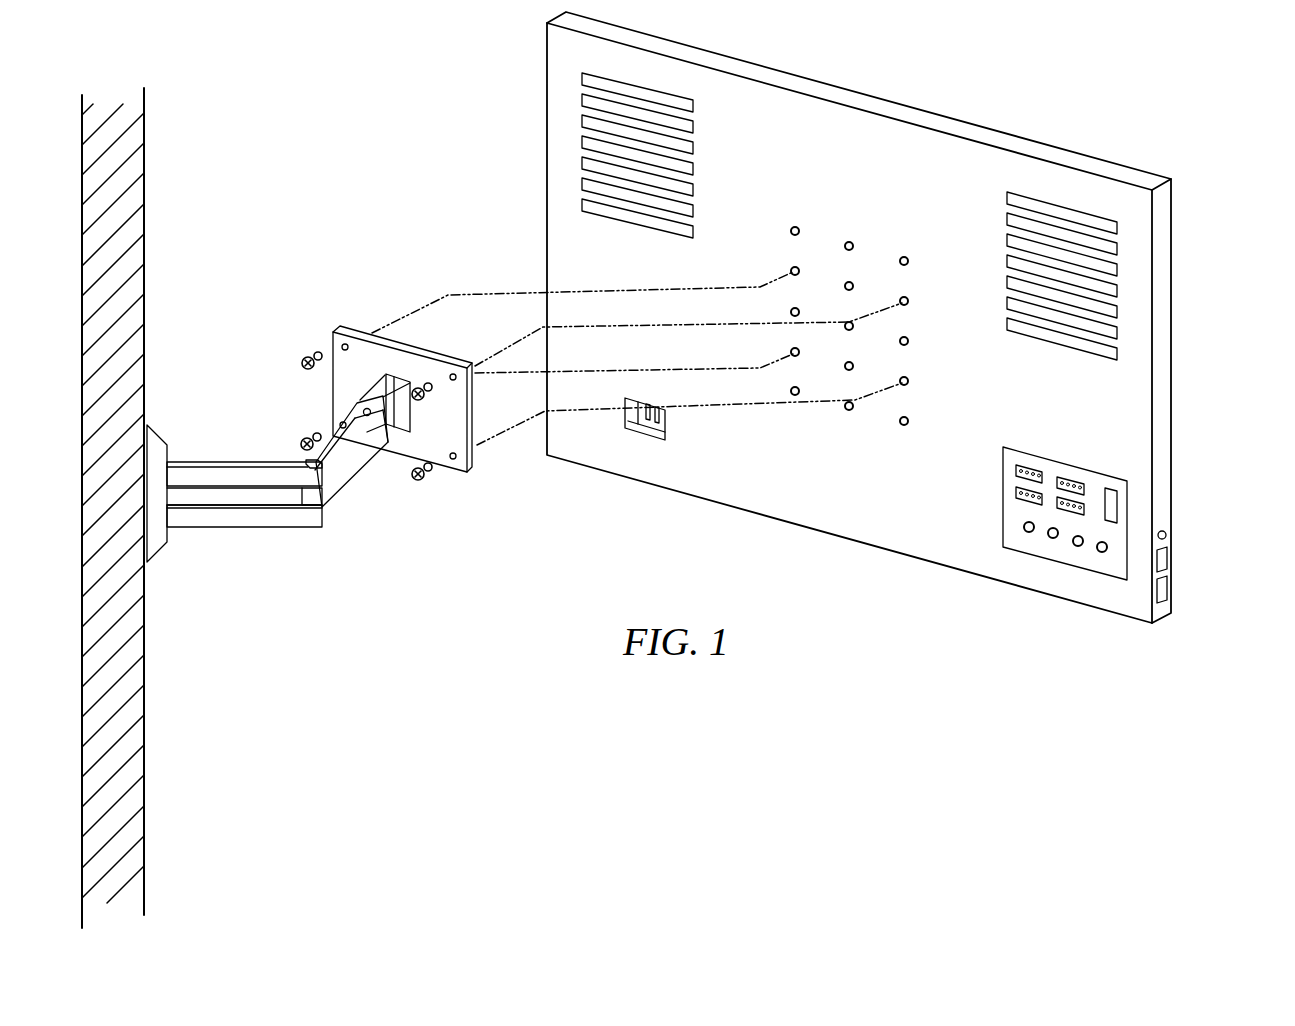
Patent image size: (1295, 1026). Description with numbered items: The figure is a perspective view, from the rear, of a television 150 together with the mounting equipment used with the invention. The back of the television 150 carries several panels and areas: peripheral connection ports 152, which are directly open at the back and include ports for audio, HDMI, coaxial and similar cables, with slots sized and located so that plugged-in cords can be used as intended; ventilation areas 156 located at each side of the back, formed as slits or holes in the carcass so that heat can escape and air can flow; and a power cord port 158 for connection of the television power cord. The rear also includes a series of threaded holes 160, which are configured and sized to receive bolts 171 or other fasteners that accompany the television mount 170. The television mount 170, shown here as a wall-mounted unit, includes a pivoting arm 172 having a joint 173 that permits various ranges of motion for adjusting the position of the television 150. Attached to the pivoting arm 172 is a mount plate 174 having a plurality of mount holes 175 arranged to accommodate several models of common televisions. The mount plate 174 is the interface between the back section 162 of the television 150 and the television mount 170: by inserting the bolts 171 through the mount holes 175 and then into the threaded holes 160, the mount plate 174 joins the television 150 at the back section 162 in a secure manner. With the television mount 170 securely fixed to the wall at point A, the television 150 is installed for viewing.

The television 150 is at (1158, 406).
The peripheral connection ports 152 is at (1062, 562).
The ventilation areas 156 is at (588, 162).
The power cord port 158 is at (632, 428).
The threaded holes 160 is at (793, 270).
The back section 162 is at (882, 248).
The television mount 170 is at (275, 528).
The bolts 171 is at (304, 359).
The pivoting arm 172 is at (360, 458).
The joint 173 is at (310, 462).
The mount plate 174 is at (403, 342).
The mount holes 175 is at (345, 345).
The point A is at (147, 565).